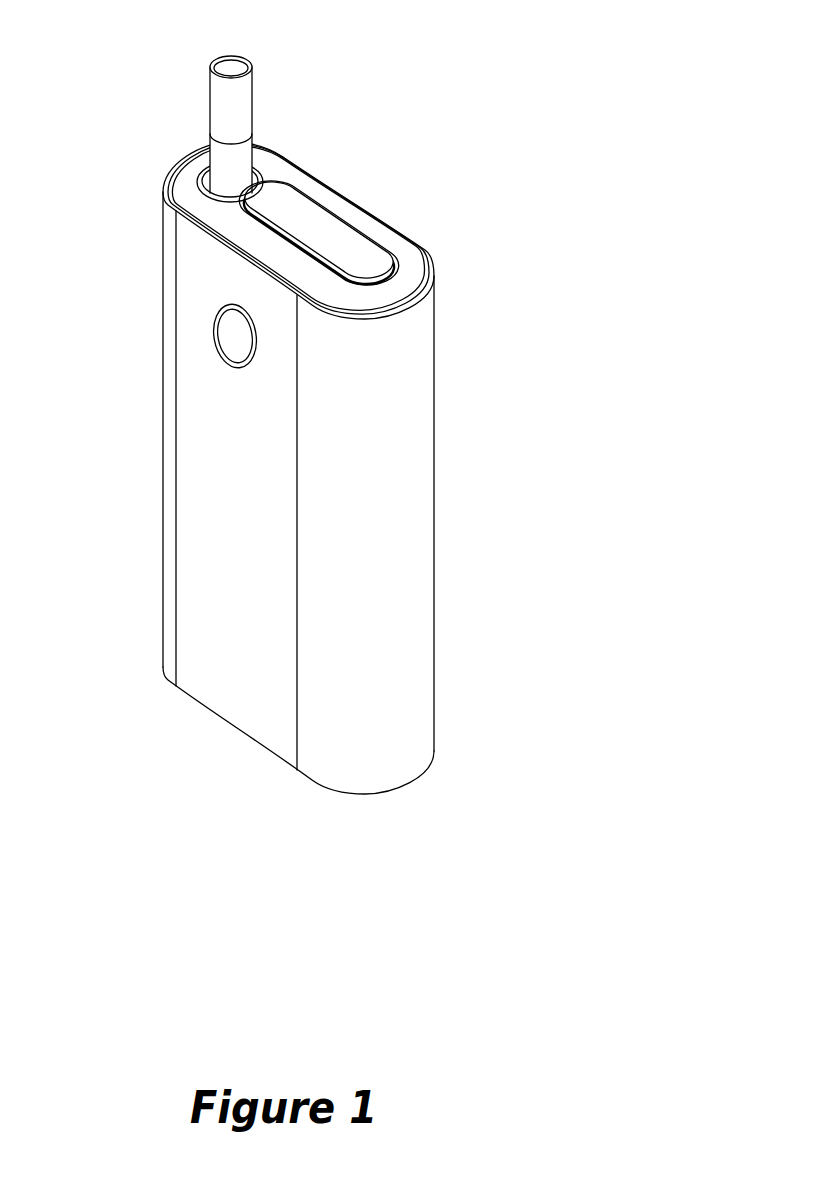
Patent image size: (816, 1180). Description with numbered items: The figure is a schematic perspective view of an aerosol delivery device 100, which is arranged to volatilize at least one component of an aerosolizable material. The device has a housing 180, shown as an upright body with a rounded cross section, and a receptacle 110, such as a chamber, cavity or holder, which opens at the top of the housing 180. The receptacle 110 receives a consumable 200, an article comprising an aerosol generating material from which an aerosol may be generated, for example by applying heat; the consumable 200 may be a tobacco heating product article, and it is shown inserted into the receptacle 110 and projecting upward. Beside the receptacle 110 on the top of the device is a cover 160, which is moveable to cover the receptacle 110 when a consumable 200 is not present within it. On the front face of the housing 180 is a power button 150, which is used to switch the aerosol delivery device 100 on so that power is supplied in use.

The aerosol delivery device 100 is at (270, 405).
The receptacle 110 is at (207, 170).
The power button 150 is at (228, 327).
The cover 160 is at (320, 210).
The housing 180 is at (227, 685).
The consumable 200 is at (220, 110).